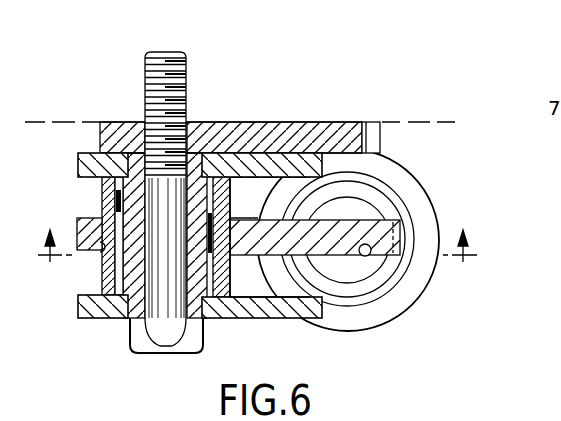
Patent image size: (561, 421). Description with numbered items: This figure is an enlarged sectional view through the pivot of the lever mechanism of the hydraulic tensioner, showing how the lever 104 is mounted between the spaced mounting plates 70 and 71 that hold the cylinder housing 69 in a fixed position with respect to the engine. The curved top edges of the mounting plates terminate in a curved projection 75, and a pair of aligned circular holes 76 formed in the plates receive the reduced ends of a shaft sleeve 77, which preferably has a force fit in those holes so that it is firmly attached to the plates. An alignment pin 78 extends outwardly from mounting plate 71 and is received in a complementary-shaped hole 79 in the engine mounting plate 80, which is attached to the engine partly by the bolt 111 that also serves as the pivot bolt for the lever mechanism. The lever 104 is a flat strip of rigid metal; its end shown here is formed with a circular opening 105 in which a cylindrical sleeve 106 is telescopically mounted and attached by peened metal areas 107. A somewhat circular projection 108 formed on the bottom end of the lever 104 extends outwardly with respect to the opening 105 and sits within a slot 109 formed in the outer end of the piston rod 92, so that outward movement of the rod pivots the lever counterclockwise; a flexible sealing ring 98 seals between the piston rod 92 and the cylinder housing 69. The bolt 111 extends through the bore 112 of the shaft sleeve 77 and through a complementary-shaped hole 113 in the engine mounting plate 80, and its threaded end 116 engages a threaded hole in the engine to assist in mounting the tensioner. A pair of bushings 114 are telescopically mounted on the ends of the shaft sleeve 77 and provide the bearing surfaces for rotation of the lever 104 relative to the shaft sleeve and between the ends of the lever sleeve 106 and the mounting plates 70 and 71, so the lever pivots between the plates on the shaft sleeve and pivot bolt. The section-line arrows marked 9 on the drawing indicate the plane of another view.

The cylinder housing 69 is at (425, 215).
The mounting plate 70 is at (90, 320).
The mounting plate 71 is at (86, 157).
The curved projection 75 is at (322, 165).
The circular holes 76 is at (198, 152).
The shaft sleeve 77 is at (273, 180).
The alignment pin 78 is at (288, 120).
The hole 79 is at (268, 138).
The engine mounting plate 80 is at (338, 142).
The piston rod 92 is at (365, 210).
The flexible sealing ring 98 is at (375, 192).
The lever 104 is at (80, 232).
The circular opening 105 is at (105, 250).
The cylindrical sleeve 106 is at (233, 263).
The peened metal areas 107 is at (101, 214).
The circular projection 108 is at (400, 252).
The slot 109 is at (365, 255).
The bolt 111 is at (168, 340).
The bore 112 is at (146, 338).
The hole 113 is at (142, 138).
The bushings 114 is at (110, 182).
The threaded end 116 is at (186, 77).
The section line 9 is at (257, 259).